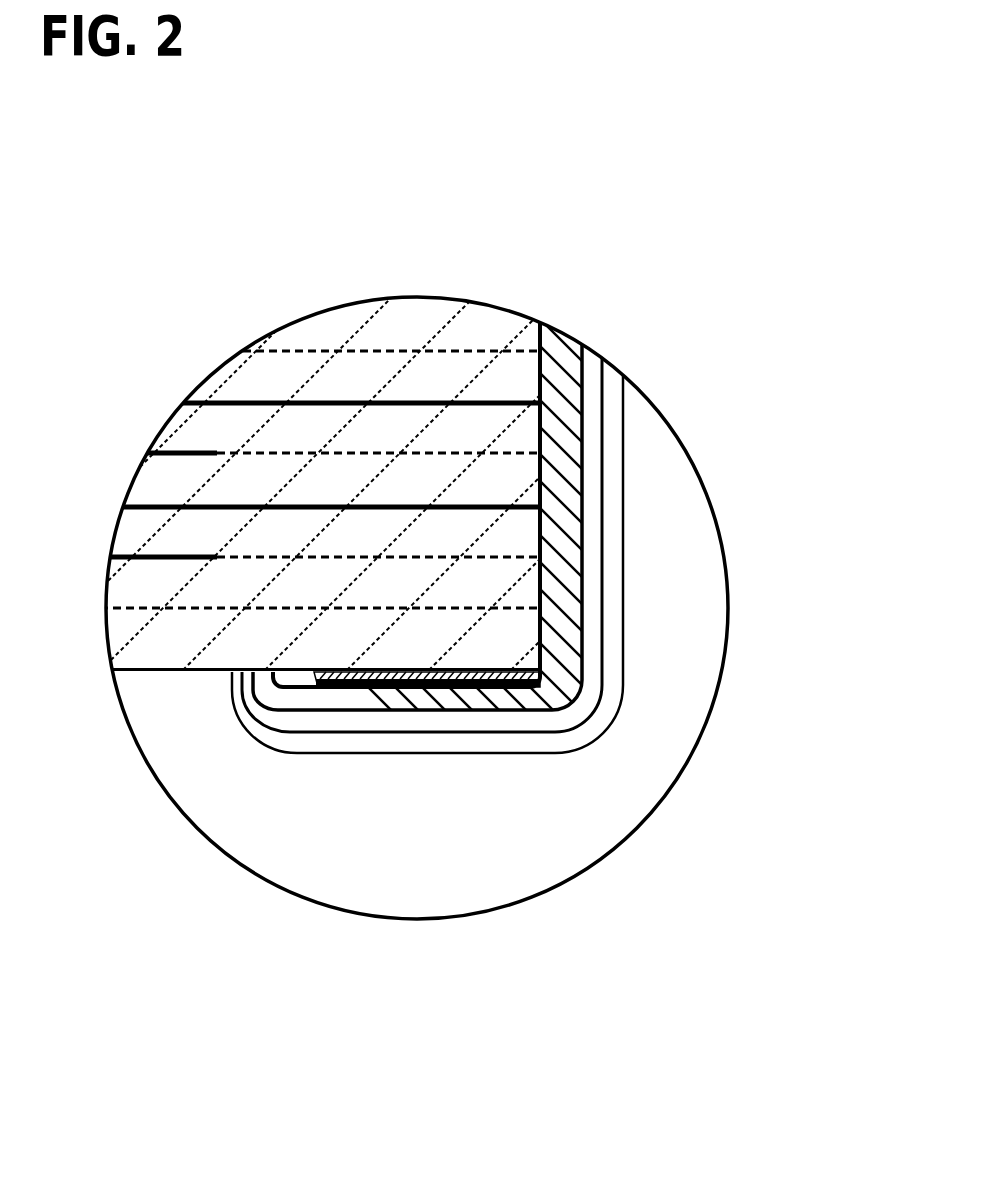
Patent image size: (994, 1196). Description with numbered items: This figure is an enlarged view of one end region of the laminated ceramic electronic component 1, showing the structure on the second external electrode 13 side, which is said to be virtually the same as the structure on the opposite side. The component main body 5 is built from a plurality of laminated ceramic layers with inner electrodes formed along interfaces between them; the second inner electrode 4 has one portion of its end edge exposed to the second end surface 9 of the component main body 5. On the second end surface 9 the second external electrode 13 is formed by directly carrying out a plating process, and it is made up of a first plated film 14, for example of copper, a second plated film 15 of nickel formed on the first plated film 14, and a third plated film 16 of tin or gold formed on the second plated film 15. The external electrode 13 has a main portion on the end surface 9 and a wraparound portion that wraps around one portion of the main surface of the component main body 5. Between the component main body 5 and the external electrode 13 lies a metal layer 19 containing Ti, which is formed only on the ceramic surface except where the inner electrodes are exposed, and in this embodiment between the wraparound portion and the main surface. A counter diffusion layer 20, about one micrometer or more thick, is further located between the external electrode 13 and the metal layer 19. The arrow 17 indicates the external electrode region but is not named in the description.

The laminated ceramic electronic component 1 is at (74, 211).
The second inner electrode 4 is at (318, 401).
The component main body 5 is at (136, 678).
The second end surface 9 is at (545, 433).
The second external electrode 13 is at (505, 513).
The first plated film 14 is at (556, 352).
The second plated film 15 is at (588, 364).
The third plated film 16 is at (497, 195).
The exterior body 17 is at (634, 516).
The metal layer 19 is at (545, 679).
The counter diffusion layer 20 is at (493, 688).